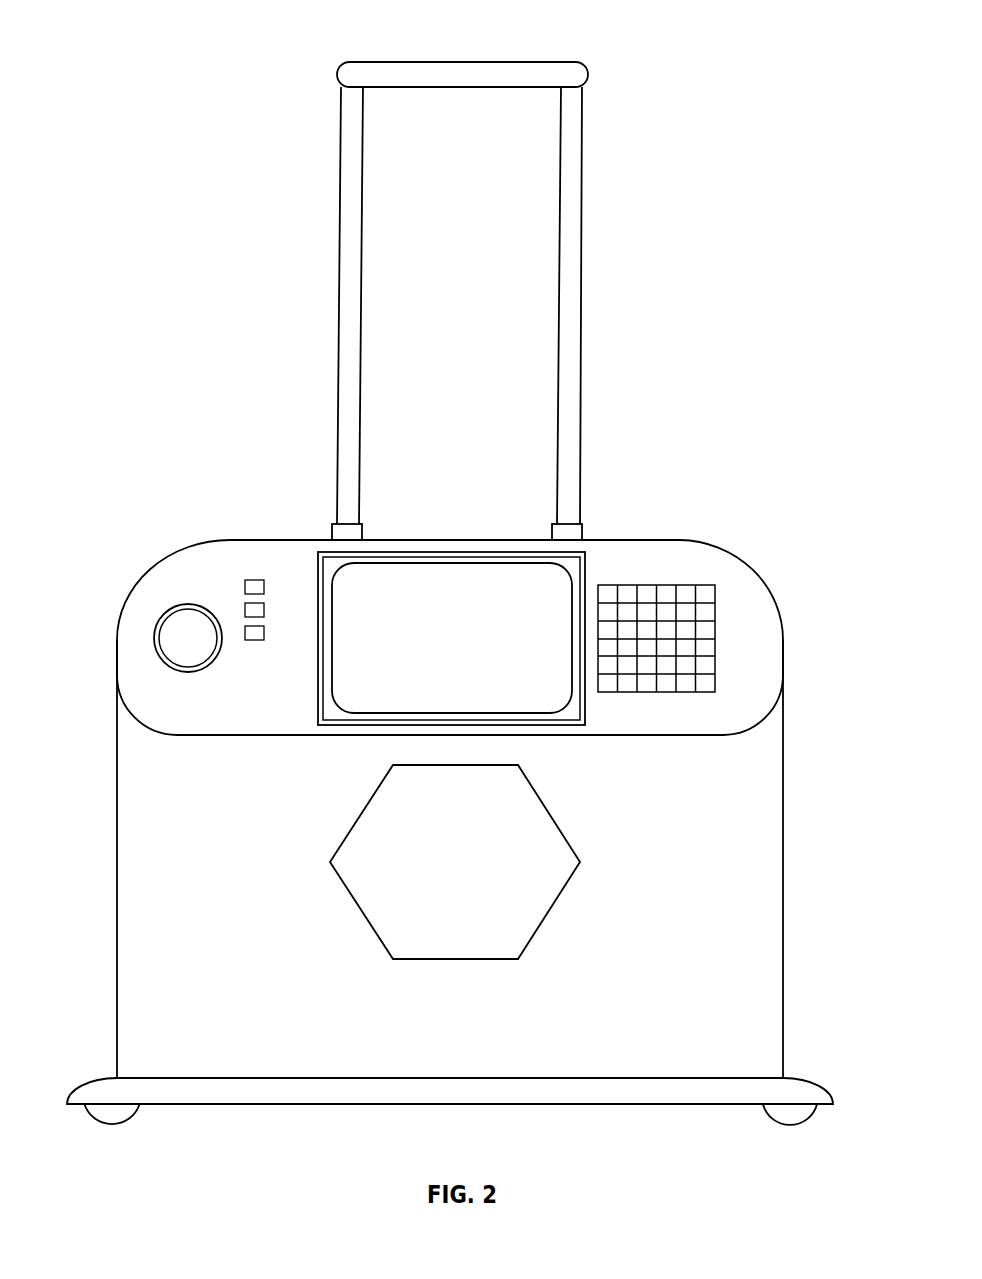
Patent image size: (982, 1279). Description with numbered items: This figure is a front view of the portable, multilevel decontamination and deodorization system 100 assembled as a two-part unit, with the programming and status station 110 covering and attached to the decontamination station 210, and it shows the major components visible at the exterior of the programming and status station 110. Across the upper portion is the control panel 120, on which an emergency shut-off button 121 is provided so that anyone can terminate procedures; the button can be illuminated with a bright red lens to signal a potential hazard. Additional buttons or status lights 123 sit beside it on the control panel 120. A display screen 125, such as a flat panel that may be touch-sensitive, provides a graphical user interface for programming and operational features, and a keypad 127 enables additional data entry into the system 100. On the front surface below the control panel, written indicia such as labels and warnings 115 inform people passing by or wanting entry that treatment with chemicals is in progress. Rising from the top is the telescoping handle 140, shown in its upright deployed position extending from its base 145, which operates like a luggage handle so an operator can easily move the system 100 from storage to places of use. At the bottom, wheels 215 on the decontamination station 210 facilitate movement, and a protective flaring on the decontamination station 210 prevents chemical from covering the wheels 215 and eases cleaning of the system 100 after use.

The portable, multilevel decontamination and deodorization system 100 is at (202, 88).
The programming and status station 110 is at (783, 713).
The labels and warnings 115 is at (617, 755).
The control panel 120 is at (205, 550).
The emergency shut-off button 121 is at (158, 627).
The status lights 123 is at (238, 603).
The display screen 125 is at (318, 555).
The keypad 127 is at (690, 613).
The telescoping handle 140 is at (586, 76).
The base 145 is at (577, 522).
The decontamination station 210 is at (800, 1080).
The wheels 215 is at (118, 1127).